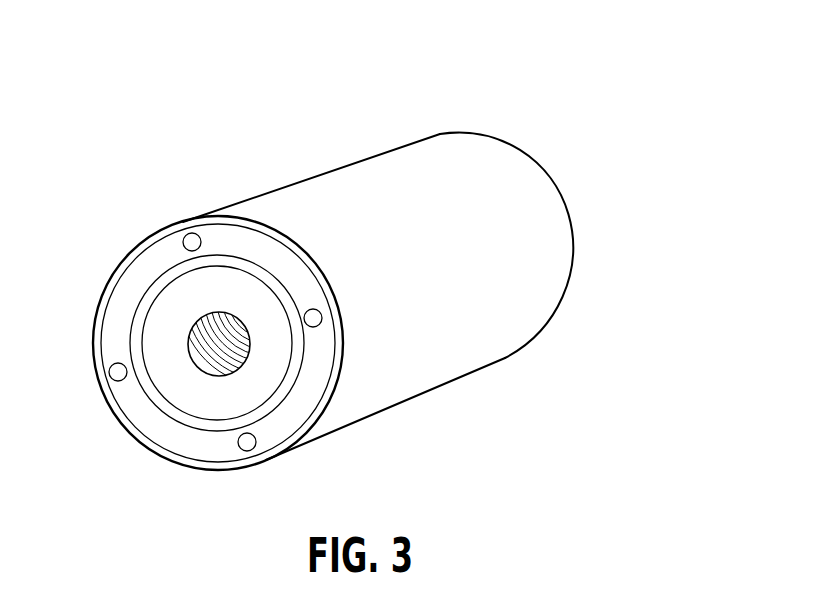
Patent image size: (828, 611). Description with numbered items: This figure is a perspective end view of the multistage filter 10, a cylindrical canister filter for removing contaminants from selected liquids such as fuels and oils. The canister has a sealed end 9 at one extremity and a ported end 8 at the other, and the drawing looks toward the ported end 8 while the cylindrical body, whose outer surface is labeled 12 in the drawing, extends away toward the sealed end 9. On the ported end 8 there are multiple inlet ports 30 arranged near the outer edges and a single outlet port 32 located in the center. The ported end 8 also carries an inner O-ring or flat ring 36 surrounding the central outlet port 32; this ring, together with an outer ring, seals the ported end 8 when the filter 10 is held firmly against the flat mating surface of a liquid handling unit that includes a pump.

The sealed end 9 is at (608, 172).
The multistage filter 10 is at (436, 127).
The cylindrical outer surface 12 is at (483, 343).
The ported end 8 is at (94, 401).
The inner O-ring or flat ring 36 is at (277, 405).
The inlet ports 30 is at (238, 446).
The outlet port 32 is at (187, 333).